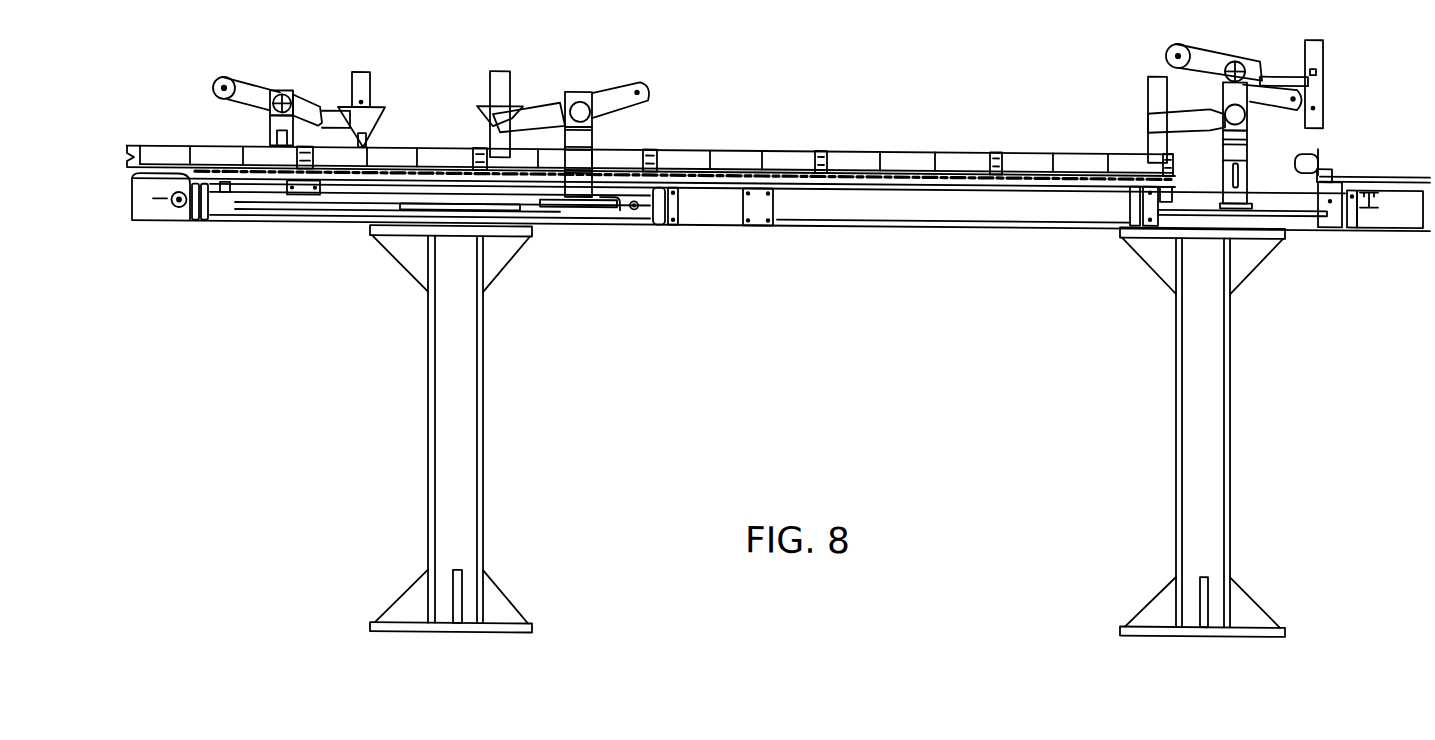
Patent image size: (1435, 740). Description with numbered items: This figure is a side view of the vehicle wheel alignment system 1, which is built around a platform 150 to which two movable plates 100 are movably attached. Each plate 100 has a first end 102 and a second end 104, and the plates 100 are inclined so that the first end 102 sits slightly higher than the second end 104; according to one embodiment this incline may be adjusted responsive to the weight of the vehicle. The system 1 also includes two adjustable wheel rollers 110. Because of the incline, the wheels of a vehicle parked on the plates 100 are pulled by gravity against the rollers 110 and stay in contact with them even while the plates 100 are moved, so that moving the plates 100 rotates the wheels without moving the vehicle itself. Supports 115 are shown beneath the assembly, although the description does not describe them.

The vehicle wheel alignment system 1 is at (862, 326).
The movable plate 100 is at (862, 177).
The first end 102 is at (371, 140).
The second end 104 is at (1362, 156).
The adjustable wheel roller 110 is at (1318, 139).
The pedestal support 115 is at (482, 388).
The platform 150 is at (965, 200).